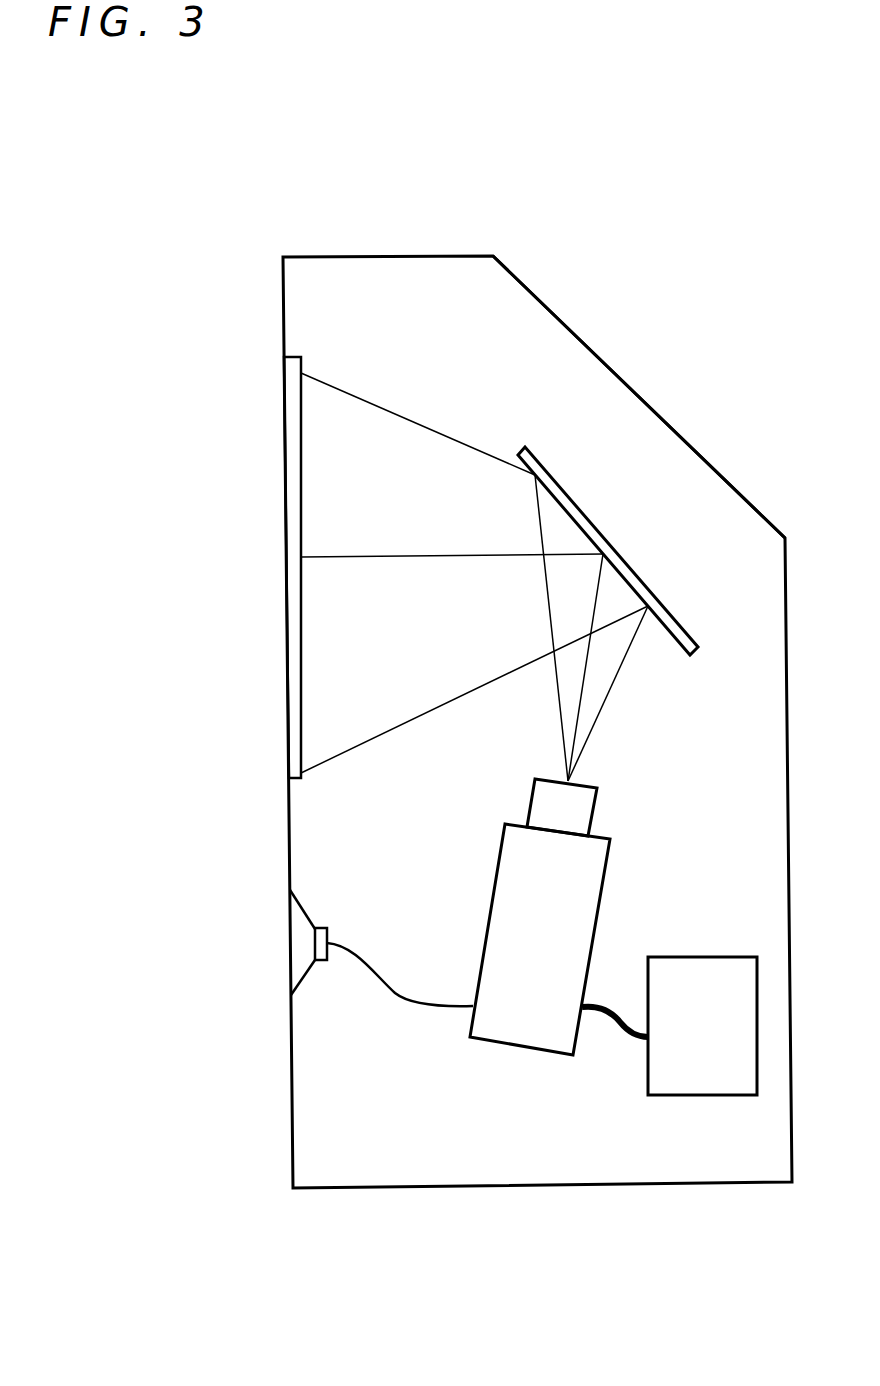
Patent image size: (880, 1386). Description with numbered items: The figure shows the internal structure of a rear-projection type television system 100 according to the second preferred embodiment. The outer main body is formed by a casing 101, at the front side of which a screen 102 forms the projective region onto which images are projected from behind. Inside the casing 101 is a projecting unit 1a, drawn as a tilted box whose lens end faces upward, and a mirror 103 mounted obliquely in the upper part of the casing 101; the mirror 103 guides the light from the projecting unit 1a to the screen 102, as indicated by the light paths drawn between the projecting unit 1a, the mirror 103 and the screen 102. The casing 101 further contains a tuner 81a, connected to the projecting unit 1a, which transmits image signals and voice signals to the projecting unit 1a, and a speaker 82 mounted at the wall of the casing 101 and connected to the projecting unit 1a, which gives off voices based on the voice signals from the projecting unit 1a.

The television system 100 is at (245, 205).
The casing 101 is at (637, 392).
The screen 102 is at (287, 505).
The mirror 103 is at (638, 573).
The projecting unit 1a is at (490, 898).
The speaker 82 is at (290, 930).
The tuner 81a is at (700, 957).